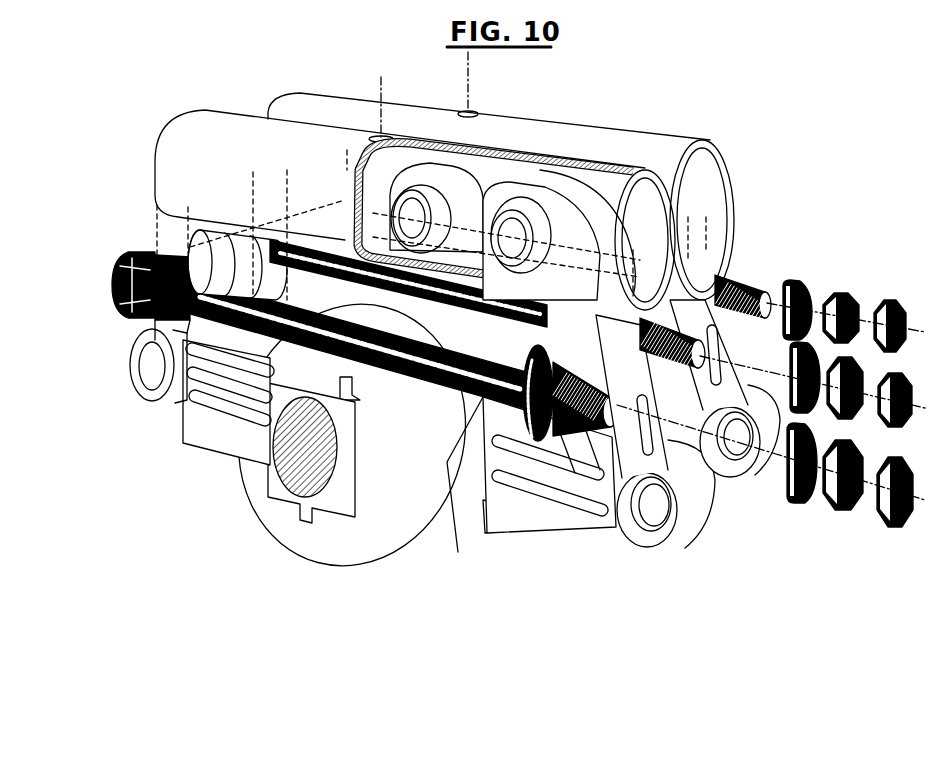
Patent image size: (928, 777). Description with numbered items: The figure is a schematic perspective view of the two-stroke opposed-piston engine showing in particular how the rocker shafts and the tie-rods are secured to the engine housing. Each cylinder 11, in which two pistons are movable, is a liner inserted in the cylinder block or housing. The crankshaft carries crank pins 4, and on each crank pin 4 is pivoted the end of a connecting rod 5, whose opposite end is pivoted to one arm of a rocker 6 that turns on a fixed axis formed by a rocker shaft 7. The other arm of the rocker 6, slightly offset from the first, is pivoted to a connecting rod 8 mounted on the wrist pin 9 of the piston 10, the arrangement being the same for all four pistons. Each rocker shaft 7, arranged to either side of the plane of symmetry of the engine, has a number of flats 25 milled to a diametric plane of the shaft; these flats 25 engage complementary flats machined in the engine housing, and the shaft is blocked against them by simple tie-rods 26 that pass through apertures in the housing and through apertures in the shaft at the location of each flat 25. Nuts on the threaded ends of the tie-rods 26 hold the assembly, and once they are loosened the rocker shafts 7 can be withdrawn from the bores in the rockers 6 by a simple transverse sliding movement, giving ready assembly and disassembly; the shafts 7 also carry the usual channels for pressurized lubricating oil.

The crank pin 4 is at (307, 468).
The connecting rod 5 is at (253, 443).
The rocker 6 is at (195, 230).
The rocker shaft 7 is at (125, 286).
The connecting rod 8 is at (477, 207).
The wrist pin 9 is at (423, 193).
The piston 10 is at (468, 157).
The cylinder 11 is at (631, 150).
The flat 25 is at (255, 223).
The tie-rod 26 is at (340, 317).